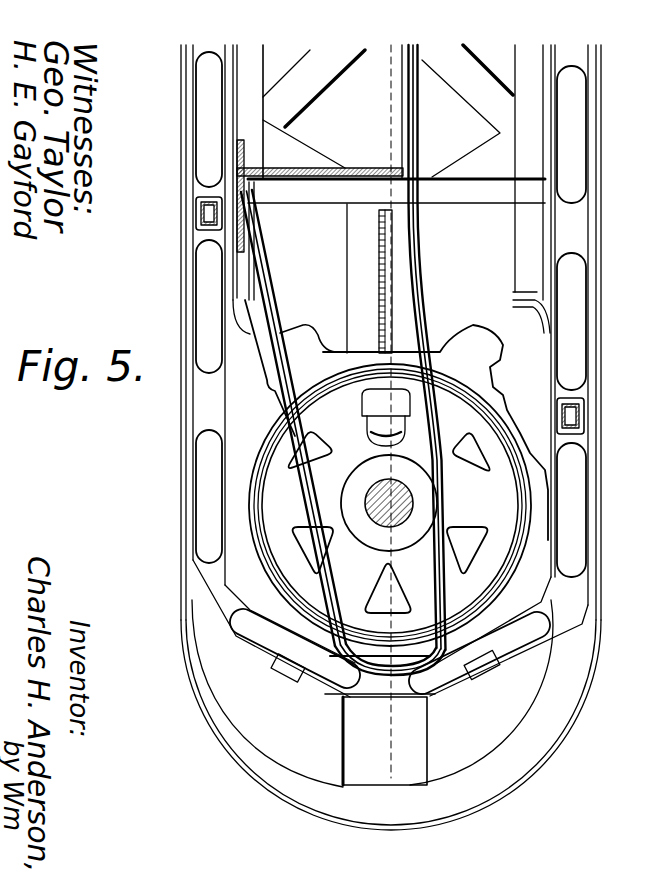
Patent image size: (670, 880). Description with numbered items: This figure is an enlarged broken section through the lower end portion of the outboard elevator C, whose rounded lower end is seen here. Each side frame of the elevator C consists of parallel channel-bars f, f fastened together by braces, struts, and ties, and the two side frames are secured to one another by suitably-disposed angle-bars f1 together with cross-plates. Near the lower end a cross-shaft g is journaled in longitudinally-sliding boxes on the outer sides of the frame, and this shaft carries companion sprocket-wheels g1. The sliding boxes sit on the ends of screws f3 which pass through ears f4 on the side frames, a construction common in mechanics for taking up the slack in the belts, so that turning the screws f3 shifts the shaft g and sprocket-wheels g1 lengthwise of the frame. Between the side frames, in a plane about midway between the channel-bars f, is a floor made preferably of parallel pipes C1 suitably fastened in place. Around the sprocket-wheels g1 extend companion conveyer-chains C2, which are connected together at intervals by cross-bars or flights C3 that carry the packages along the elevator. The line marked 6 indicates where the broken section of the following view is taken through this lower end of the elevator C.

The channel-bars f is at (188, 125).
The angle-bars f1 is at (400, 150).
The screws f3 is at (380, 252).
The ears f4 is at (393, 410).
The outboard elevator C is at (416, 371).
The pipes C1 is at (421, 124).
The conveyer-chains C2 is at (204, 473).
The cross-bars or flights C3 is at (196, 213).
The cross-shaft g is at (376, 482).
The sprocket-wheels g1 is at (465, 343).
The section line 6 is at (410, 730).